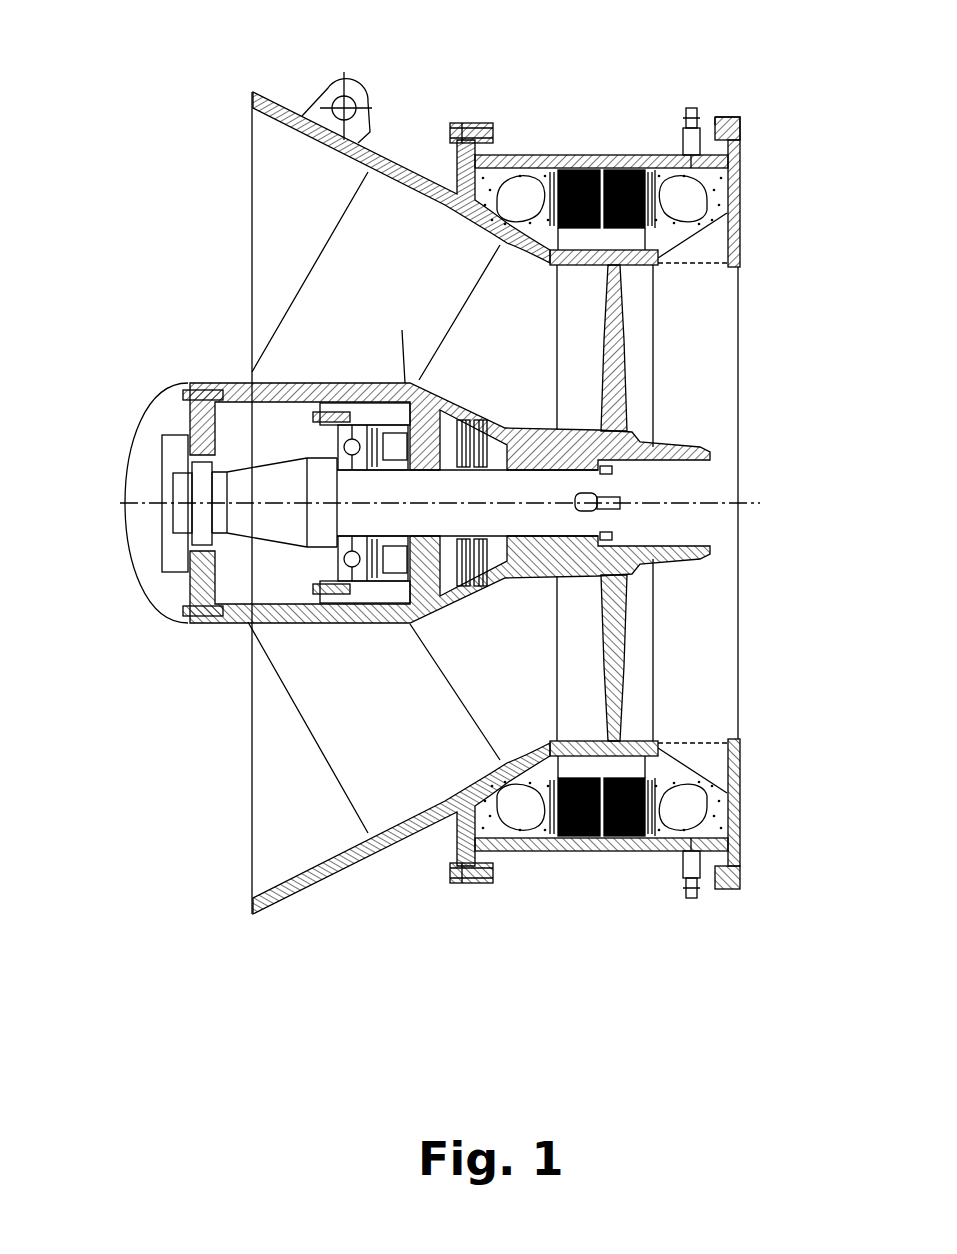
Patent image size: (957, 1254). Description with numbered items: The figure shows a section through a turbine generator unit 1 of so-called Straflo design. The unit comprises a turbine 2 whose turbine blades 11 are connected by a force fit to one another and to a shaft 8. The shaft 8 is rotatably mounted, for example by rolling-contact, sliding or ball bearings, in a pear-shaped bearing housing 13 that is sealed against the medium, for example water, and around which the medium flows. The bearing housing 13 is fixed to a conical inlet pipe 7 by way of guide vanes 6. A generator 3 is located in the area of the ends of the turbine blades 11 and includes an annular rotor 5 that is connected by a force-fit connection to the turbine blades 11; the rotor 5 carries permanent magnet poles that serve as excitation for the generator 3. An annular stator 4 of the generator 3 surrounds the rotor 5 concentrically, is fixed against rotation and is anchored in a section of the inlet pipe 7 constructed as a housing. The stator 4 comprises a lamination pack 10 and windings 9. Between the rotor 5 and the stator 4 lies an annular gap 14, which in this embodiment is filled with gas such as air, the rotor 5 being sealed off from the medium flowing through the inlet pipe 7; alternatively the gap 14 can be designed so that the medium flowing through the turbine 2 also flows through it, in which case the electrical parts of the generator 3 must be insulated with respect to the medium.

The turbine generator unit 1 is at (780, 207).
The turbine 2 is at (668, 405).
The generator 3 is at (600, 152).
The annular stator 4 is at (742, 118).
The annular rotor 5 is at (617, 777).
The guide vanes 6 is at (380, 745).
The conical inlet pipe 7 is at (317, 880).
The shaft 8 is at (285, 523).
The windings 9 is at (690, 806).
The lamination pack 10 is at (583, 852).
The turbine blades 11 is at (633, 652).
The bearing housing 13 is at (235, 380).
The annular gap 14 is at (658, 852).